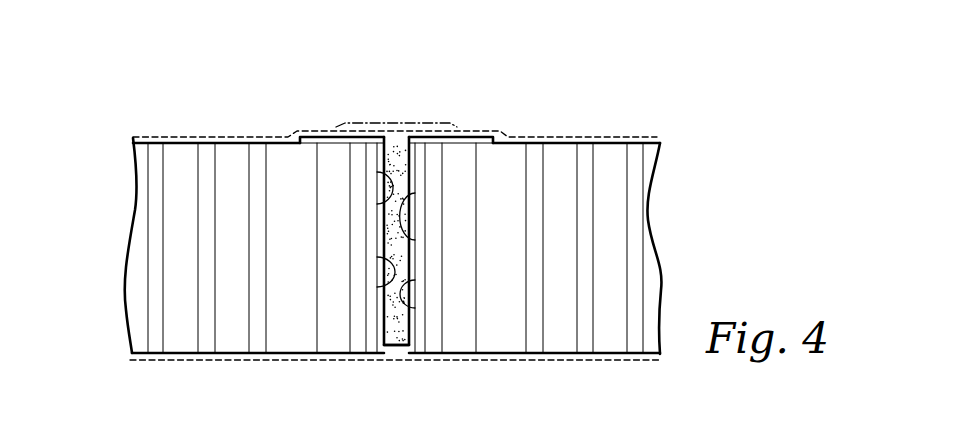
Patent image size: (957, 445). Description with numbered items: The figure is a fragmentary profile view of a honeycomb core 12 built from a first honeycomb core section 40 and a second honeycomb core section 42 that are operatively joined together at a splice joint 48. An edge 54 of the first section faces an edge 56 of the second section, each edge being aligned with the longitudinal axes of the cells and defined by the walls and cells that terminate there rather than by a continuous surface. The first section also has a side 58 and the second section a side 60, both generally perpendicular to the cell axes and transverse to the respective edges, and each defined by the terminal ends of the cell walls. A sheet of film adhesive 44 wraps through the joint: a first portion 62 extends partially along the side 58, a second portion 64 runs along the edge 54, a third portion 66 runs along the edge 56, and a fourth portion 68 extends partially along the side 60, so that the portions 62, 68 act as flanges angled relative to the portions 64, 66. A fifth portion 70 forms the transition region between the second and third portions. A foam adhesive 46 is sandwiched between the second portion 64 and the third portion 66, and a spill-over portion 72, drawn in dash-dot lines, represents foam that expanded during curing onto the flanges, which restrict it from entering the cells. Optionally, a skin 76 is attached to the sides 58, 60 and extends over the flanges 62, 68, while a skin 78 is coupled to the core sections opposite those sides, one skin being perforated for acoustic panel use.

The honeycomb core 12 is at (595, 77).
The first honeycomb core section 40 is at (131, 239).
The second honeycomb core section 42 is at (663, 272).
The sheet of film adhesive 44 is at (414, 337).
The foam adhesive 46 is at (392, 318).
The splice joint 48 is at (396, 109).
The edge of the first honeycomb core section 54 is at (385, 200).
The edge of the second honeycomb core section 56 is at (403, 212).
The side of the first honeycomb core section 58 is at (192, 142).
The side of the second honeycomb core section 60 is at (572, 142).
The first portion of the film adhesive 62 is at (328, 136).
The second portion of the film adhesive 64 is at (385, 287).
The third portion of the film adhesive 66 is at (410, 305).
The fourth portion of the film adhesive 68 is at (425, 136).
The fifth portion of the film adhesive 70 is at (398, 348).
The spill-over portion 72 is at (358, 117).
The skin 76 is at (538, 136).
The skin 78 is at (586, 367).